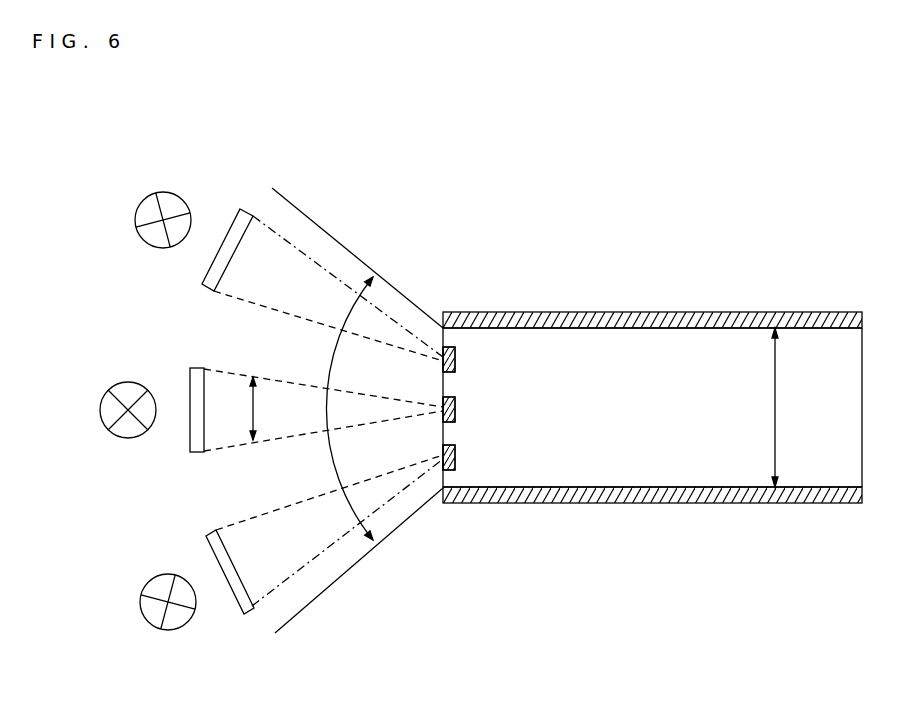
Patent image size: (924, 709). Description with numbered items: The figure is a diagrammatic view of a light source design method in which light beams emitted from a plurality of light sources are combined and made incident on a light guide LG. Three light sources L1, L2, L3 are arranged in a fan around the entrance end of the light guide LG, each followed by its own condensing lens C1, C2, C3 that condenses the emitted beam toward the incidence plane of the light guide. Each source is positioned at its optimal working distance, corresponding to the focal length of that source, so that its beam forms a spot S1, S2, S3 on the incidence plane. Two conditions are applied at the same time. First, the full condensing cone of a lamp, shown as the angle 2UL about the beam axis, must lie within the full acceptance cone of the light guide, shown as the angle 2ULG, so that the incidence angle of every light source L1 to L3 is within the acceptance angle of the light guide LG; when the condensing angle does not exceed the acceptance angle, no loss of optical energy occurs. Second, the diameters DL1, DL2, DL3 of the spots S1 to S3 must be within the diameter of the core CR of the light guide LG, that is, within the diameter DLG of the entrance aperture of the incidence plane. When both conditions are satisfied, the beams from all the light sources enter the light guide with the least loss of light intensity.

The light source L1 is at (172, 194).
The light source L2 is at (120, 384).
The light source L3 is at (150, 580).
The condensing lens C1 is at (231, 226).
The condensing lens C2 is at (190, 397).
The condensing lens C3 is at (220, 562).
The condensing angle of the lamp 2UL is at (234, 408).
The acceptance angle of the light guide 2ULG is at (357, 410).
The light guide LG is at (620, 312).
The core CR is at (695, 313).
The diameter of the entrance aperture DLG is at (759, 407).
The spot S1 is at (456, 347).
The spot S2 is at (456, 397).
The spot S3 is at (456, 445).
The diameter of the spot DL1 is at (466, 360).
The diameter of the spot DL2 is at (466, 410).
The diameter of the spot DL3 is at (466, 458).